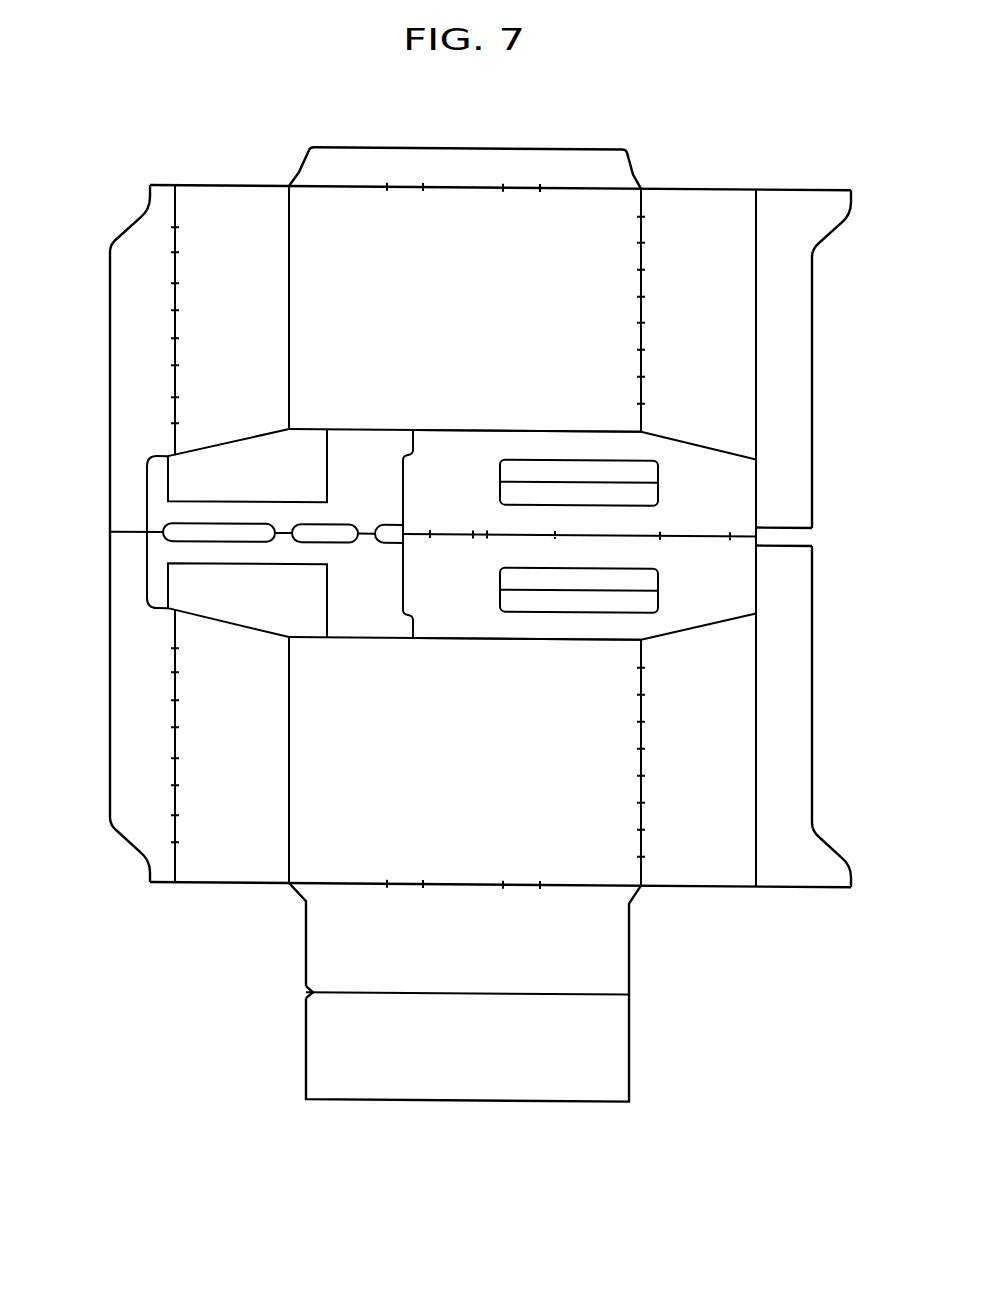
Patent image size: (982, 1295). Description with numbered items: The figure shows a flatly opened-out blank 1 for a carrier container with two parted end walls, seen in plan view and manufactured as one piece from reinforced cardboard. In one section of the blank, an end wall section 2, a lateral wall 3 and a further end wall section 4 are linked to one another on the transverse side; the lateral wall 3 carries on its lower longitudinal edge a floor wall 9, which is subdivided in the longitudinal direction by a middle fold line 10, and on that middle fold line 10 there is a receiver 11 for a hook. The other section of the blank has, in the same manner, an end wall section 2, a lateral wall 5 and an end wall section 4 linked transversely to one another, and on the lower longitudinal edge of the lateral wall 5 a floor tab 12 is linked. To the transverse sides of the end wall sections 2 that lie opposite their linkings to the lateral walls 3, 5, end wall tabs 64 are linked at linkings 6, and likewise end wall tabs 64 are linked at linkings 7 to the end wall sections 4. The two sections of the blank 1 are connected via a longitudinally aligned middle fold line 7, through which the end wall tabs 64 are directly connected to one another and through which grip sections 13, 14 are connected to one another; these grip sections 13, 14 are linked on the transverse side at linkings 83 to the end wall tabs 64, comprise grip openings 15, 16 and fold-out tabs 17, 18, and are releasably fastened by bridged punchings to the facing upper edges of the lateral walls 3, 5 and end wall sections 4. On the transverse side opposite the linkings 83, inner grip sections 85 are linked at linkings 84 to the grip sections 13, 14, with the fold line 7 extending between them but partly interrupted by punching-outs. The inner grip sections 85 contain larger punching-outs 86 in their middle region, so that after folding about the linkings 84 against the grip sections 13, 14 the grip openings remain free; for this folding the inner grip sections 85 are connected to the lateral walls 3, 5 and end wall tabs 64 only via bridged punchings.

The blank 1 is at (146, 166).
The end wall section 2 is at (248, 321).
The lateral wall 3 is at (481, 773).
The end wall section 4 is at (713, 319).
The lateral wall 5 is at (481, 319).
The linking 6 is at (178, 247).
The middle fold line 7 is at (756, 248).
The floor wall 9 is at (494, 955).
The middle fold line 10 is at (413, 993).
The receiver 11 is at (308, 991).
The floor tab 12 is at (485, 161).
The grip section 13 is at (527, 603).
The grip section 14 is at (468, 496).
The grip opening 15 is at (560, 595).
The grip opening 16 is at (553, 465).
The tab 17 is at (645, 576).
The tab 18 is at (645, 486).
The end wall tab 64 is at (123, 302).
The linking 83 is at (758, 473).
The linking 84 is at (404, 456).
The inner grip section 85 is at (376, 496).
The punching-out 86 is at (208, 470).